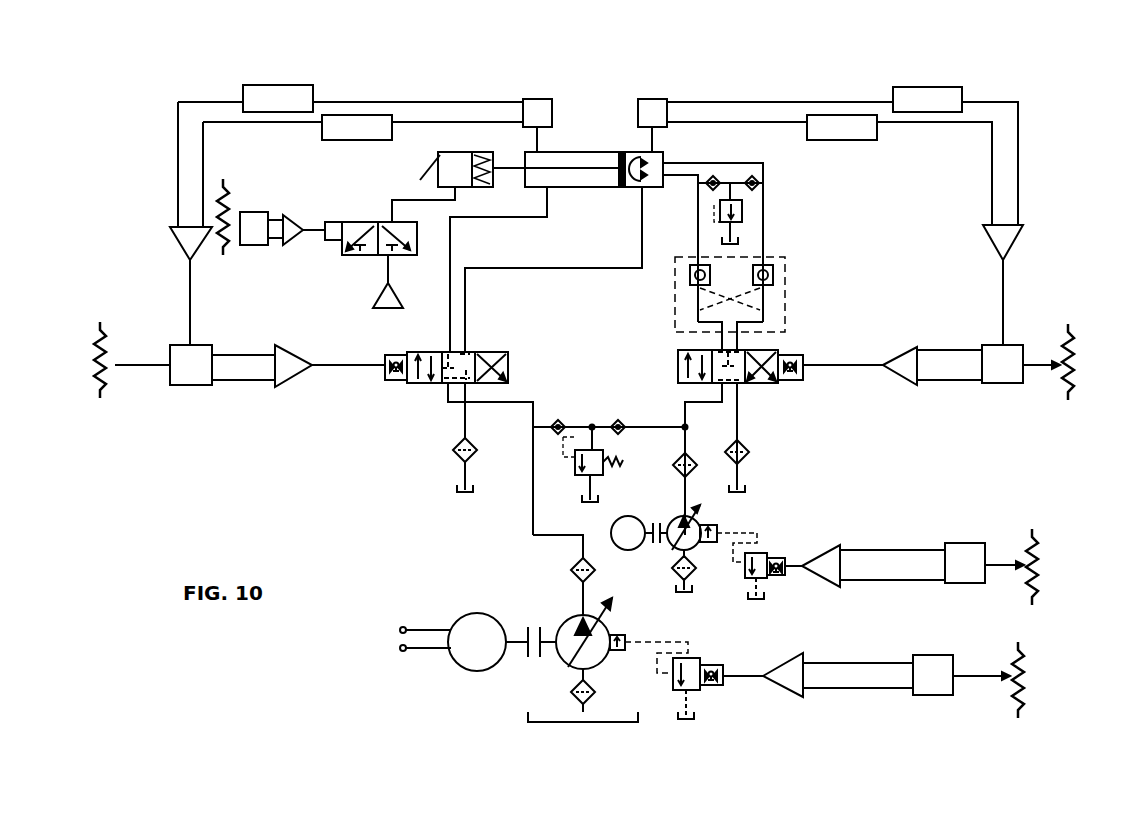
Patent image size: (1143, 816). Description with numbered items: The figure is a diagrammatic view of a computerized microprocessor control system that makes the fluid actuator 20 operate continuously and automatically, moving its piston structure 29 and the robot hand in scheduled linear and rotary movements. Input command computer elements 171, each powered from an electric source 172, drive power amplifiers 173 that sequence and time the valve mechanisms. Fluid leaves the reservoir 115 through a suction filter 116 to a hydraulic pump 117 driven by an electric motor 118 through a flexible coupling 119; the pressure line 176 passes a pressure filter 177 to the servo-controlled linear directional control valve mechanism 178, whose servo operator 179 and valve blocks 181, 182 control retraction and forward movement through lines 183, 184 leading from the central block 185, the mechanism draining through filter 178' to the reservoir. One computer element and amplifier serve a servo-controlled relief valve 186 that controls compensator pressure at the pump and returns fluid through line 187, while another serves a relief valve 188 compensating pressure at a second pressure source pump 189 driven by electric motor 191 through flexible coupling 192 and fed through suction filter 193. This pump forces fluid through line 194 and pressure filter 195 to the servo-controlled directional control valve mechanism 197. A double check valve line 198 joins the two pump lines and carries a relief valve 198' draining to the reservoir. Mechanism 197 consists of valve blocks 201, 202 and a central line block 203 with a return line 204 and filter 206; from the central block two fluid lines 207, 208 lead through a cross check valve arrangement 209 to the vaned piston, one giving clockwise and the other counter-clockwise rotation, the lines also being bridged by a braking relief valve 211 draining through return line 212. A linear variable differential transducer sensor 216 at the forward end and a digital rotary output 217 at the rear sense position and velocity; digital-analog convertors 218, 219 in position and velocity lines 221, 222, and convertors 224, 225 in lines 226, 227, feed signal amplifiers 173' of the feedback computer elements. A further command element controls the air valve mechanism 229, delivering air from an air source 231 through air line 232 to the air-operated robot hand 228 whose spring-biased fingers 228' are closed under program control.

The actuator 20 is at (565, 152).
The piston structure 29 is at (636, 190).
The reservoir 115 is at (718, 242).
The suction filter 116 is at (570, 690).
The hydraulic pump 117 is at (597, 655).
The electric motor 118 is at (470, 612).
The flexible coupling 119 is at (537, 605).
The input command computer element 171 is at (200, 385).
The electric source 172 is at (102, 400).
The power amplifier 173 is at (597, 457).
The signal amplifier 173' is at (598, 285).
The pressure line 176 is at (530, 505).
The pressure filter 177 is at (571, 570).
The servo-controlled linear directional control valve mechanism 178 is at (460, 459).
The filter 178' is at (488, 454).
The servo operator 179 is at (385, 355).
The valve block 181 is at (430, 352).
The valve block 182 is at (508, 368).
The line 183 is at (450, 245).
The line 184 is at (535, 268).
The central block 185 is at (465, 362).
The servo-controlled relief valve 186 is at (690, 660).
The line 187 is at (690, 700).
The servo-controlled relief valve 188 is at (760, 552).
The pressure source pump 189 is at (700, 515).
The electric motor 191 is at (625, 516).
The flexible coupling 192 is at (657, 545).
The suction filter 193 is at (696, 568).
The line 194 is at (680, 475).
The pressure filter 195 is at (690, 426).
The servo-controlled directional control valve mechanism 197 is at (749, 395).
The double check valve line 198 is at (609, 412).
The relief valve 198' is at (705, 427).
The valve block 201 is at (678, 368).
The valve block 202 is at (765, 350).
The central line block 203 is at (712, 350).
The return line 204 is at (740, 430).
The filter 206 is at (750, 458).
The fluid line 207 is at (690, 283).
The fluid line 208 is at (773, 283).
The cross check valve arrangement 209 is at (785, 270).
The braking relief valve 211 is at (745, 205).
The return line 212 is at (740, 230).
The linear variable differential transducer sensor 216 is at (528, 98).
The digital rotary output 217 is at (645, 98).
The digital-analog convertor 218 is at (285, 90).
The digital-analog convertor 219 is at (315, 138).
The position line 221 is at (366, 102).
The velocity line 222 is at (430, 122).
The digital-analog convertor 224 is at (910, 86).
The digital-analog convertor 225 is at (840, 140).
The position line 226 is at (705, 102).
The velocity line 227 is at (718, 122).
The air-operated robot hand 228 is at (481, 183).
The fingers 228' is at (396, 166).
The air valve mechanism 229 is at (368, 258).
The air source 231 is at (410, 277).
The air line 232 is at (405, 198).